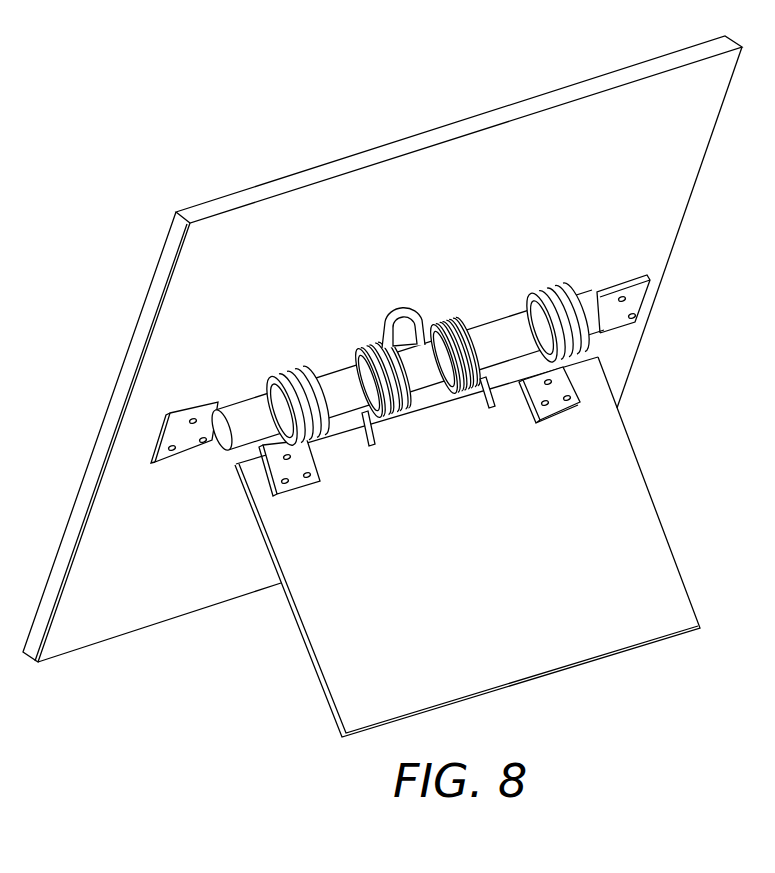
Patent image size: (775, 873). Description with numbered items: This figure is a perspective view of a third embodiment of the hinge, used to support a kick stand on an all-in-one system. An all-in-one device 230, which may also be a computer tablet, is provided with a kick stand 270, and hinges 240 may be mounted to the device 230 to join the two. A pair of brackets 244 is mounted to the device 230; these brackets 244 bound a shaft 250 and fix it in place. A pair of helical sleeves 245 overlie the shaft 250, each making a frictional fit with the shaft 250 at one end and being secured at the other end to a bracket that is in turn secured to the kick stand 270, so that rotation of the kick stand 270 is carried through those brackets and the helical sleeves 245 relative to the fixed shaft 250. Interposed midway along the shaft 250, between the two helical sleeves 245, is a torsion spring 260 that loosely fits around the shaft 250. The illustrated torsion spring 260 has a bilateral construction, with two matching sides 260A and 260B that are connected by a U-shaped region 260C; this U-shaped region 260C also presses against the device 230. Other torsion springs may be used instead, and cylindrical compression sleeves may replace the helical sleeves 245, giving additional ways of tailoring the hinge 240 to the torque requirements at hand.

The all-in-one device 230 is at (675, 145).
The hinge 240 is at (241, 463).
The bracket 244 is at (188, 449).
The helical sleeve 245 is at (283, 381).
The shaft 250 is at (489, 333).
The torsion spring 260 is at (402, 356).
The side of torsion spring 260A is at (408, 402).
The side of torsion spring 260B is at (462, 388).
The U-shaped region 260C is at (378, 341).
The kick stand 270 is at (605, 498).